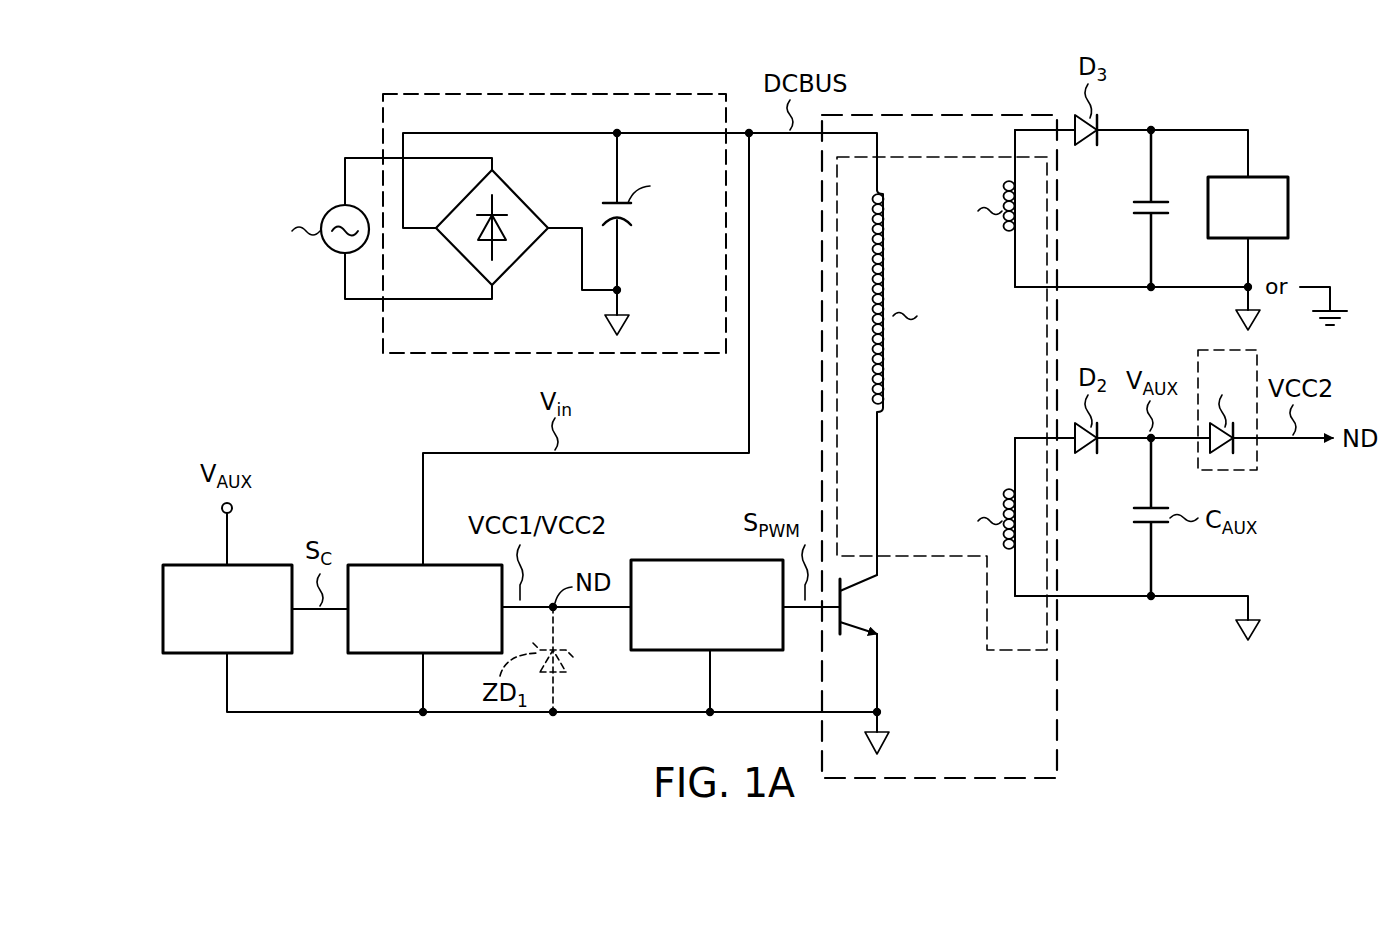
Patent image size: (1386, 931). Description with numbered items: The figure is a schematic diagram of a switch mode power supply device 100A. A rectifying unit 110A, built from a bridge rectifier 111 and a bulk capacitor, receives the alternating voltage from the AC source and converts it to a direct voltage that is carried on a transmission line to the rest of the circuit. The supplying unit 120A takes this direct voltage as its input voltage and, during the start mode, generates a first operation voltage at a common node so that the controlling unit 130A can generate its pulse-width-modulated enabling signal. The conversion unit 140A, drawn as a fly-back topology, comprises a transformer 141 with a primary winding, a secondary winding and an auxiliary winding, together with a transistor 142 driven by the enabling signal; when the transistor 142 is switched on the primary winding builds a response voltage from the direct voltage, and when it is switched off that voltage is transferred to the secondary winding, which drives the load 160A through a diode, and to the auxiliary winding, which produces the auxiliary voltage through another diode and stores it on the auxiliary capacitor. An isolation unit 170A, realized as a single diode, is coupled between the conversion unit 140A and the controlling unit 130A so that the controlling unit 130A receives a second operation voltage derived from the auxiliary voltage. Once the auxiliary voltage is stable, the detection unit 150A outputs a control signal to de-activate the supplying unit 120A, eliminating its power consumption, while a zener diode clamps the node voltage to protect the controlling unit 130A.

The power supply device 100A is at (1296, 110).
The rectifying unit 110A is at (412, 98).
The bridge rectifier 111 is at (526, 202).
The supplying unit 120A is at (371, 656).
The controlling unit 130A is at (732, 652).
The conversion unit 140A is at (904, 116).
The transformer 141 is at (918, 157).
The transistor 142 is at (889, 607).
The detection unit 150A is at (207, 656).
The load 160A is at (1290, 213).
The isolation unit 170A is at (1258, 352).